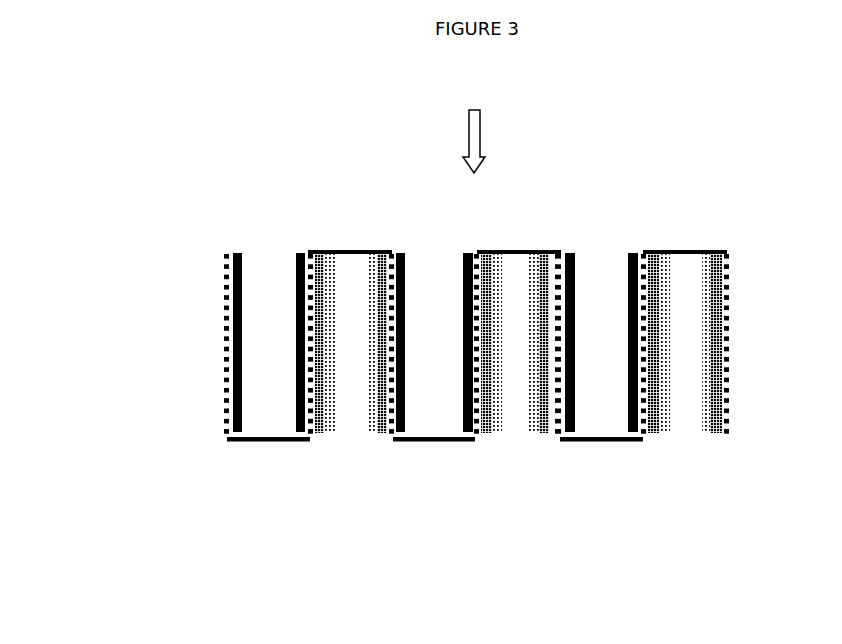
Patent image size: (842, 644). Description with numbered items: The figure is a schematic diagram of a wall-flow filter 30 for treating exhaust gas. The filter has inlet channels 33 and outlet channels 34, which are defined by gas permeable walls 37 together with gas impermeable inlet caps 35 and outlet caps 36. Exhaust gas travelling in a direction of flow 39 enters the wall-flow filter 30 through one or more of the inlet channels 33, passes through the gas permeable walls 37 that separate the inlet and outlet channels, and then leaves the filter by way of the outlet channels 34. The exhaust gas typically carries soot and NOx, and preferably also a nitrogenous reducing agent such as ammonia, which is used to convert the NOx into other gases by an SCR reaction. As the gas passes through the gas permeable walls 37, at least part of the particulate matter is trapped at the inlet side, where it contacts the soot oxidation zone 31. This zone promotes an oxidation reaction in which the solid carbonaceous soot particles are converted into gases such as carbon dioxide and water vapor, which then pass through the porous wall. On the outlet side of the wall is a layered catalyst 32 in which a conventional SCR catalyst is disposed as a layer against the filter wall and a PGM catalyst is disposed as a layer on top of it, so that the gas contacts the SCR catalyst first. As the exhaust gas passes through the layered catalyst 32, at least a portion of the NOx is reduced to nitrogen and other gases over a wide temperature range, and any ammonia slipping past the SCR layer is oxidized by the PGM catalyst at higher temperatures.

The wall-flow filter 30 is at (173, 331).
The soot oxidation zone 31 is at (463, 263).
The layered catalyst 32 is at (712, 420).
The inlet channels 33 is at (599, 283).
The outlet channels 34 is at (352, 402).
The inlet caps 35 is at (683, 252).
The outlet caps 36 is at (254, 438).
The gas permeable walls 37 is at (319, 420).
The direction of flow 39 is at (472, 137).